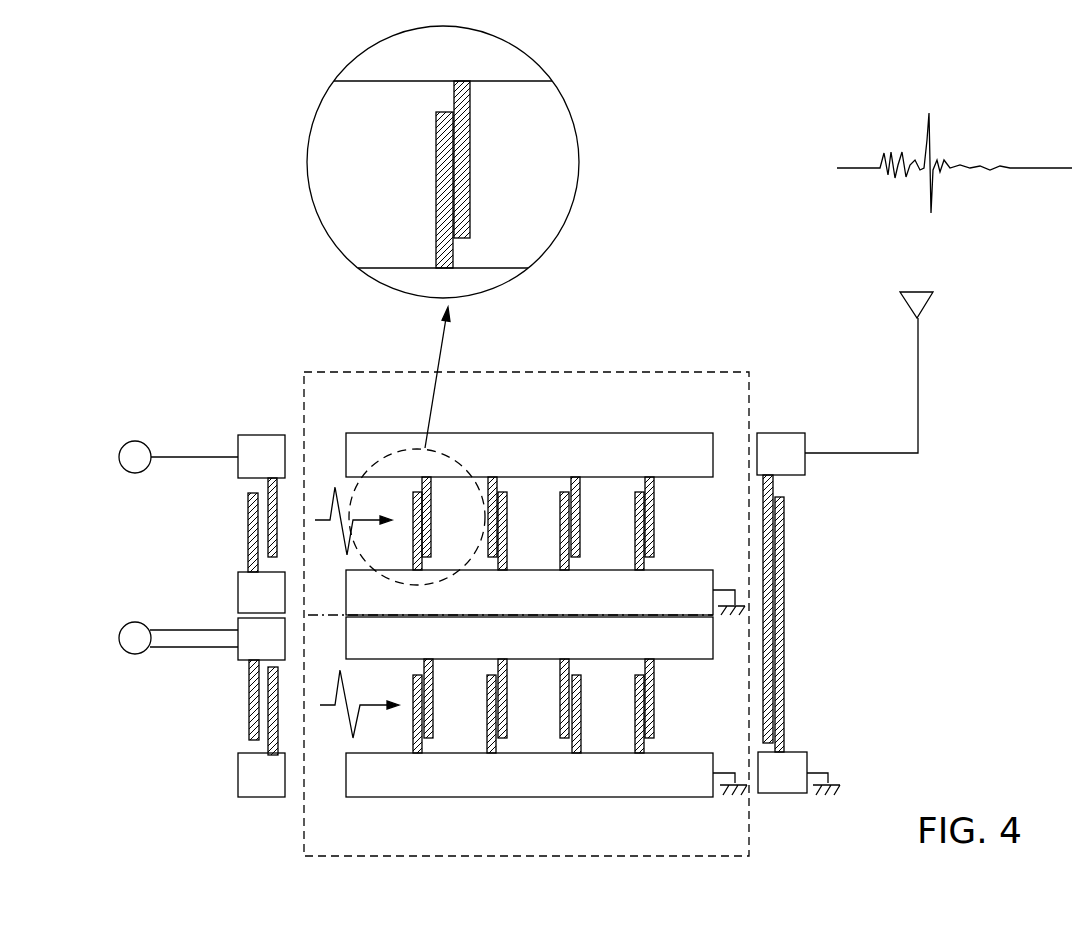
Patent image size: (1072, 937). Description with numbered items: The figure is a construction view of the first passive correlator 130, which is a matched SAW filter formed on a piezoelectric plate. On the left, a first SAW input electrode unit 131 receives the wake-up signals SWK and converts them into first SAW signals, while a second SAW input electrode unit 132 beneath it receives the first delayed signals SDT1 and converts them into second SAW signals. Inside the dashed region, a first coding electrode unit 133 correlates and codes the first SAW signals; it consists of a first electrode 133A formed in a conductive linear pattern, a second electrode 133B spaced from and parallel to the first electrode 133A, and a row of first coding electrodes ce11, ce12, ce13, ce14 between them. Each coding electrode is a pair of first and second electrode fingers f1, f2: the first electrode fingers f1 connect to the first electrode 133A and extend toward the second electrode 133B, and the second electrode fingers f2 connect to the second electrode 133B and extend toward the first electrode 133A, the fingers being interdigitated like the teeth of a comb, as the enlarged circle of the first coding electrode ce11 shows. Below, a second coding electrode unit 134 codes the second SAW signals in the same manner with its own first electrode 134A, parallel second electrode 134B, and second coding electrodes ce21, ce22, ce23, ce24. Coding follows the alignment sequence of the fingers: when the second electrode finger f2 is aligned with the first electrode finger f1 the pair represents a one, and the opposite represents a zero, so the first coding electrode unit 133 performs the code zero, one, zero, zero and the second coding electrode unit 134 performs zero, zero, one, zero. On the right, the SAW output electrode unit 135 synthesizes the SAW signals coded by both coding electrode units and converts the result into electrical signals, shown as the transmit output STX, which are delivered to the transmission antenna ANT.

The first passive correlator 130 is at (311, 328).
The first SAW input electrode unit 131 is at (248, 430).
The second SAW input electrode unit 132 is at (233, 668).
The first coding electrode unit 133 is at (602, 372).
The first electrode 133A is at (358, 441).
The second electrode 133B is at (690, 577).
The second coding electrode unit 134 is at (473, 858).
The first electrode 134A is at (693, 652).
The second electrode 134B is at (672, 758).
The SAW output electrode unit 135 is at (808, 482).
The first coding electrode ce11 is at (530, 180).
The first coding electrode ce12 is at (522, 523).
The first coding electrode ce13 is at (595, 523).
The first coding electrode ce14 is at (669, 523).
The second coding electrode ce21 is at (448, 706).
The second coding electrode ce22 is at (521, 706).
The second coding electrode ce23 is at (594, 706).
The second coding electrode ce24 is at (669, 706).
The first electrode finger f1 is at (467, 128).
The second electrode finger f2 is at (437, 157).
The wake-up signals SWK is at (169, 441).
The first delayed signals SDT1 is at (168, 622).
The transmit signal output STX is at (861, 385).
The antenna ANT is at (954, 215).